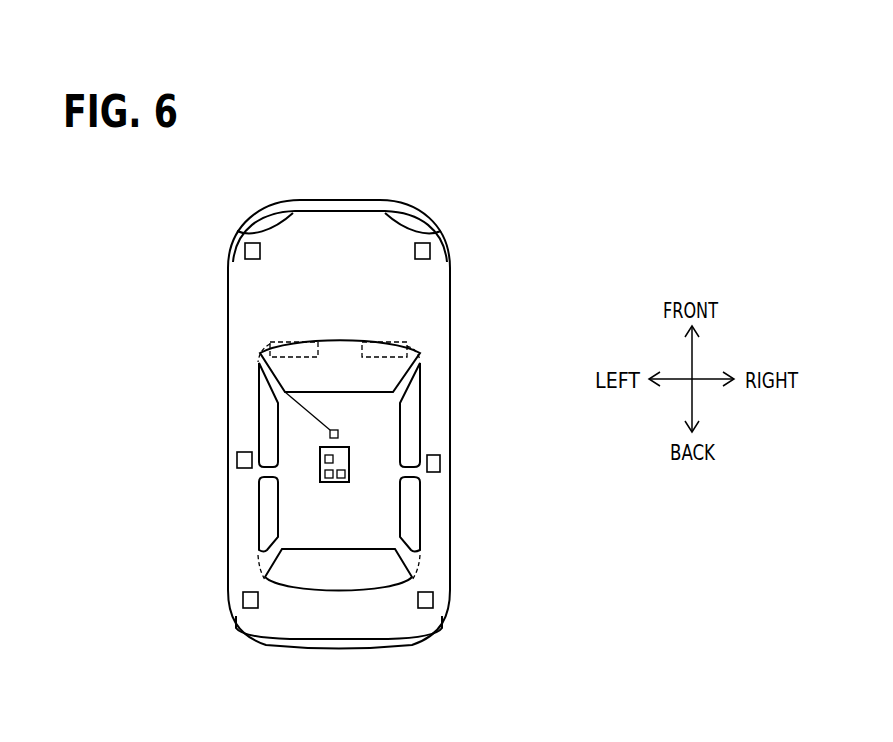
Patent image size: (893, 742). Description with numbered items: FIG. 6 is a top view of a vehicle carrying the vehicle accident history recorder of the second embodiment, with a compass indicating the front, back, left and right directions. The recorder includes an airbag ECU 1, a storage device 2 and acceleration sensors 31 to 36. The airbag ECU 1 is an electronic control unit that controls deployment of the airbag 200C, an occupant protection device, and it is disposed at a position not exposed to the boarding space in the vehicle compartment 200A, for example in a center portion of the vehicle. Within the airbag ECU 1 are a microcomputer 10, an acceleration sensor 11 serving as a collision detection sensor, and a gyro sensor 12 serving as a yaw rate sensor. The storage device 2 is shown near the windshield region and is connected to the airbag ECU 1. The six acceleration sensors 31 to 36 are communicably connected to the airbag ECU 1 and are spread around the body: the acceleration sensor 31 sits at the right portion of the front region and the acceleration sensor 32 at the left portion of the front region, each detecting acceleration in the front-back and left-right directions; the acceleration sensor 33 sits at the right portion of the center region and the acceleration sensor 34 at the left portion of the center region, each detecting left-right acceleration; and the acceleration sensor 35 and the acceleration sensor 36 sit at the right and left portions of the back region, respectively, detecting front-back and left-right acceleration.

The airbag ECU 1 is at (336, 483).
The storage device 2 is at (285, 392).
The microcomputer 10 is at (320, 448).
The acceleration sensor 11 is at (325, 474).
The gyro sensor 12 is at (345, 474).
The acceleration sensor 31 is at (430, 245).
The acceleration sensor 32 is at (245, 248).
The acceleration sensor 33 is at (436, 455).
The acceleration sensor 34 is at (237, 456).
The acceleration sensor 35 is at (433, 600).
The acceleration sensor 36 is at (245, 600).
The vehicle compartment 200A is at (420, 352).
The airbag 200C is at (372, 342).